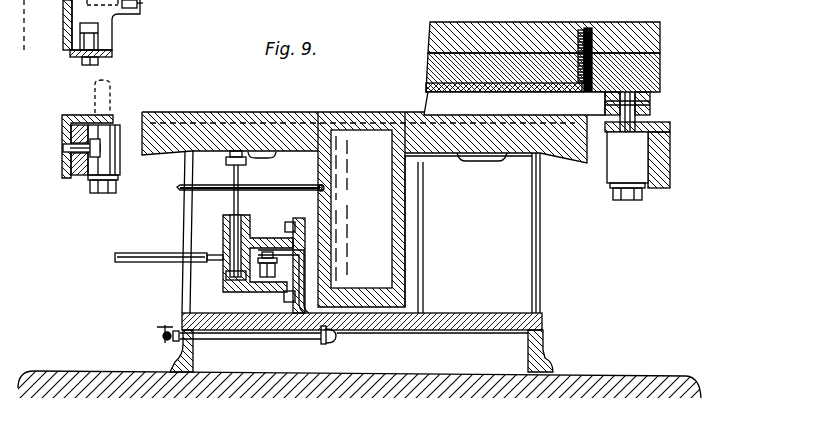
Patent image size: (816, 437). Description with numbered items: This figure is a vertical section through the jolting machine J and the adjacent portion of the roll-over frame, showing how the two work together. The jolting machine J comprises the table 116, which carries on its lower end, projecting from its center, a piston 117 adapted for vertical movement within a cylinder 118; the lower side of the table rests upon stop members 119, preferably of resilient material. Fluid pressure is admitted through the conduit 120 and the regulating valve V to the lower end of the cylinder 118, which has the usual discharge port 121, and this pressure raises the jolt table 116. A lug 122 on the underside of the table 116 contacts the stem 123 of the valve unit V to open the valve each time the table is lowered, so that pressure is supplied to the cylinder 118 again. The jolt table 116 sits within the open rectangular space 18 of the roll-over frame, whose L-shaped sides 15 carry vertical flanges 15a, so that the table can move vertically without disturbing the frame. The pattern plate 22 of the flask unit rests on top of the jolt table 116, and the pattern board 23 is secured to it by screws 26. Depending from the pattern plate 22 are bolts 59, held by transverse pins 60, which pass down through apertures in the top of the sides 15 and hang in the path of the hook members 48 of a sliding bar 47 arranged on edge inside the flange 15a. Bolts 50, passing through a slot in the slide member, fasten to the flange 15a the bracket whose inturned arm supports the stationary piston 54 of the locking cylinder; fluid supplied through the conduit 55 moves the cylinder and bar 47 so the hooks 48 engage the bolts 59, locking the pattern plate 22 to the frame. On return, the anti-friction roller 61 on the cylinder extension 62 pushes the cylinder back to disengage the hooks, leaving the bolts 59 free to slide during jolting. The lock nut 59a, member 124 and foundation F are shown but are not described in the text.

The side 15 is at (78, 96).
The vertical flange 15a is at (670, 176).
The open rectangular space 18 is at (132, 124).
The pattern plate 22 is at (514, 103).
The pattern board 23 is at (477, 18).
The screw 26 is at (580, 30).
The sliding bar 47 is at (650, 188).
The hook member 48 is at (618, 177).
The bolt 50 is at (63, 148).
The piston 54 is at (138, 2).
The conduit 55 is at (135, 8).
The bolt 59 is at (627, 159).
The nut 59a is at (628, 196).
The pin 60 is at (650, 103).
The anti-friction roller 61 is at (98, 63).
The extension 62 is at (108, 43).
The table 116 is at (237, 117).
The piston 117 is at (361, 209).
The cylinder 118 is at (408, 270).
The stop member 119 is at (264, 158).
The conduit 120 is at (147, 254).
The discharge port 121 is at (318, 190).
The lug 122 is at (228, 157).
The stem 123 is at (236, 198).
The bar 124 is at (640, 122).
The regulating valve V is at (266, 264).
The jolting machine J is at (361, 261).
The floor F is at (87, 383).